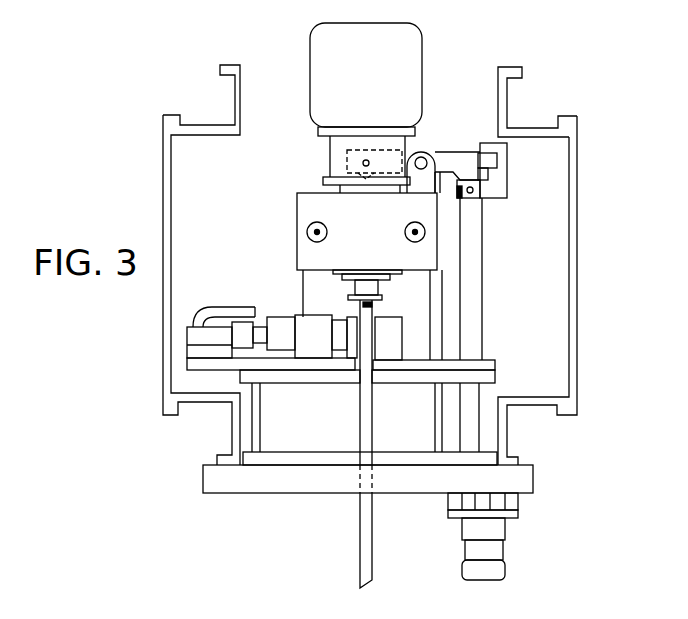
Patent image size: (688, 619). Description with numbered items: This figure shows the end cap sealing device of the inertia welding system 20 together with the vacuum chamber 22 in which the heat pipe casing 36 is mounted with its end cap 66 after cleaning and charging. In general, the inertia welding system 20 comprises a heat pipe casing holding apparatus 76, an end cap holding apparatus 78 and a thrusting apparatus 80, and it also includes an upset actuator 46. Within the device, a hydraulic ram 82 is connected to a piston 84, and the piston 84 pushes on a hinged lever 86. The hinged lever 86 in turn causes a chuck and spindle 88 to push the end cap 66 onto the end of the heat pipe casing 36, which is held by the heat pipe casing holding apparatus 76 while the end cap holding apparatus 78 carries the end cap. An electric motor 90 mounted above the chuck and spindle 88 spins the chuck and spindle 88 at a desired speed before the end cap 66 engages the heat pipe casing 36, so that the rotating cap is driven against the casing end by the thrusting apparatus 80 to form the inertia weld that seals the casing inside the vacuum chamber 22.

The inertia welding system 20 is at (246, 200).
The vacuum chamber 22 is at (578, 296).
The heat pipe casing 36 is at (352, 527).
The upset actuator 46 is at (551, 80).
The end cap 66 is at (374, 304).
The heat pipe casing holding apparatus 76 is at (222, 288).
The end cap holding apparatus 78 is at (366, 280).
The thrusting apparatus 80 is at (504, 278).
The hydraulic ram 82 is at (507, 533).
The piston 84 is at (483, 328).
The hinged lever 86 is at (438, 150).
The chuck and spindle 88 is at (342, 290).
The electric motor 90 is at (424, 58).